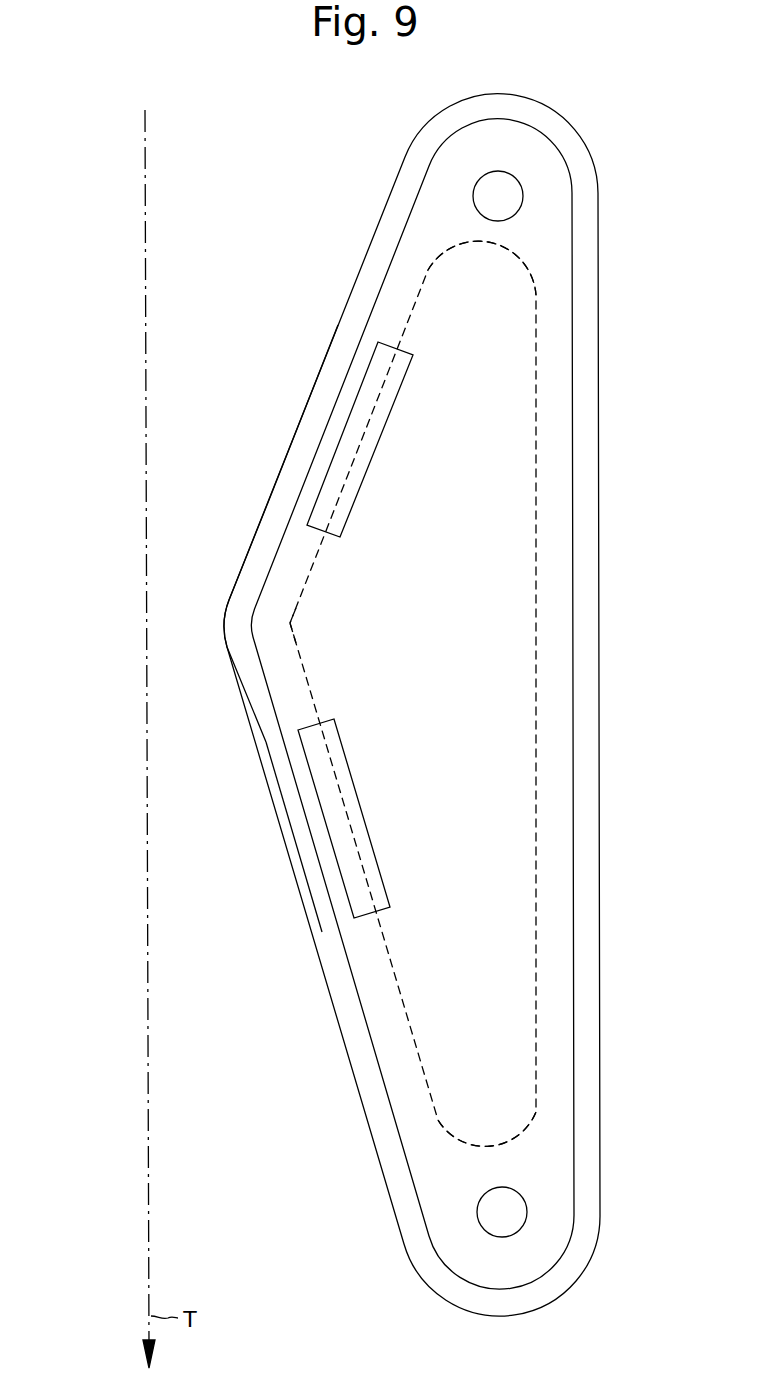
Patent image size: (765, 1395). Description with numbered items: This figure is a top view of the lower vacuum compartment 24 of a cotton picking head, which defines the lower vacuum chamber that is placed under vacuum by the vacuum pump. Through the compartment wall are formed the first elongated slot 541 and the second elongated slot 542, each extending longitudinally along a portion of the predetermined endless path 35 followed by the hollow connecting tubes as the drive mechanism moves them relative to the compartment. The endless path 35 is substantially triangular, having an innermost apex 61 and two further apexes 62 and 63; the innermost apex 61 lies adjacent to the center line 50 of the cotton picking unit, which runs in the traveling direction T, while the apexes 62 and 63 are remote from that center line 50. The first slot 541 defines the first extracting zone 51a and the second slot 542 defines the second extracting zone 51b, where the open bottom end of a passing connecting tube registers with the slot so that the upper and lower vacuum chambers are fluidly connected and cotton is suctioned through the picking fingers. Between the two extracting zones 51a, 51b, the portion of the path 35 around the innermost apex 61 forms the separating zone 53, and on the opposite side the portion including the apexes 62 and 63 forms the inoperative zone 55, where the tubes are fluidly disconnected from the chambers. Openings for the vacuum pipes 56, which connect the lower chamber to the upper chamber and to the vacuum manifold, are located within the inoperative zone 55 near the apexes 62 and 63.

The lower vacuum compartment 24 is at (572, 670).
The predetermined endless path 35 is at (536, 1027).
The center line 50 is at (145, 697).
The first extracting zone 51a is at (312, 933).
The second extracting zone 51b is at (347, 319).
The separating zone 53 is at (280, 515).
The first elongated slot 541 is at (345, 782).
The second elongated slot 542 is at (356, 480).
The inoperative zone 55 is at (600, 703).
The vacuum pipe 56 is at (475, 206).
The innermost apex 61 is at (291, 623).
The apex 62 is at (487, 243).
The apex 63 is at (490, 1160).